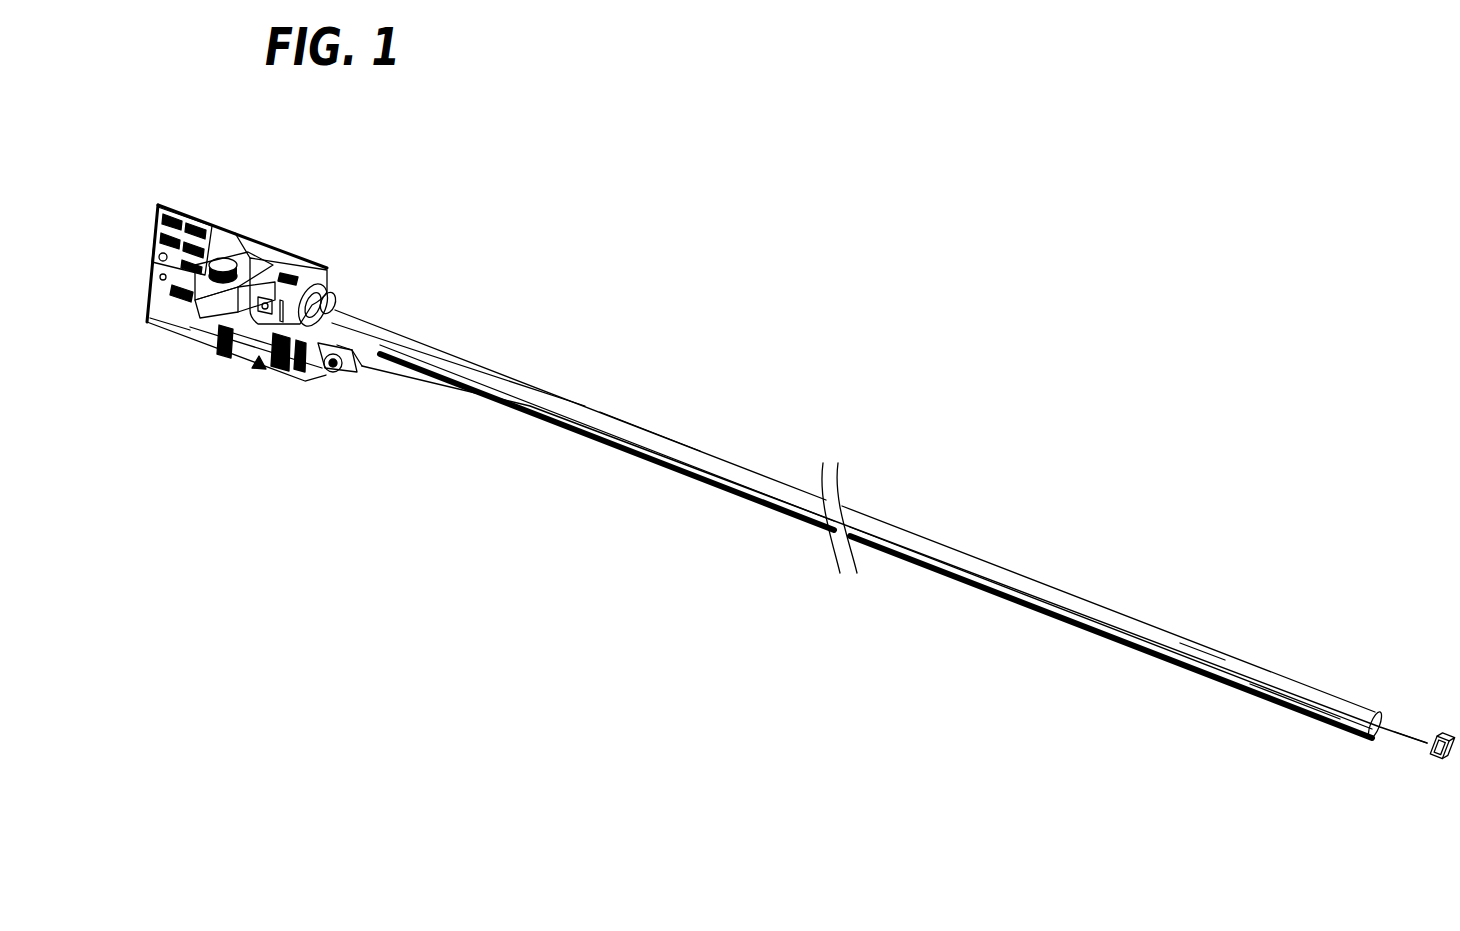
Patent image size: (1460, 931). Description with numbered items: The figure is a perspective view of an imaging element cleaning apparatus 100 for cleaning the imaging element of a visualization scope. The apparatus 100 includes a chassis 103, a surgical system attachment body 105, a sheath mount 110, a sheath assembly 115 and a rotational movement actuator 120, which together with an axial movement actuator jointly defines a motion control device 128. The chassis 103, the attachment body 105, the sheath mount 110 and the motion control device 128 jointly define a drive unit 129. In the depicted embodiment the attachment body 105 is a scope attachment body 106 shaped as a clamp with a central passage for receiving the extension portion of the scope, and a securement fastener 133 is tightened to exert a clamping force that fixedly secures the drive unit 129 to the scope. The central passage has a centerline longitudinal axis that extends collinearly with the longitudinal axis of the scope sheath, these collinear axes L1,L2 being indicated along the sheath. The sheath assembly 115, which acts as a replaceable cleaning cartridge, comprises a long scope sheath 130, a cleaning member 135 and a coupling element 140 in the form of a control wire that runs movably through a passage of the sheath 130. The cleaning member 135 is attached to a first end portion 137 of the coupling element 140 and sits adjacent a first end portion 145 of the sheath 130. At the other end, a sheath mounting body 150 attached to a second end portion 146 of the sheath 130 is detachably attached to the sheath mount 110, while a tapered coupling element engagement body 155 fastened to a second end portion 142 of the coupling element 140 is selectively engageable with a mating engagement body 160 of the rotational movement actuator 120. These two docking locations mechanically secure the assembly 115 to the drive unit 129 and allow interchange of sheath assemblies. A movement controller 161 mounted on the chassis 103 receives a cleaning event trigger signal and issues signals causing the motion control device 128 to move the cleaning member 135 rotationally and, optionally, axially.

The imaging element cleaning apparatus 100 is at (767, 273).
The chassis 103 is at (188, 333).
The surgical system attachment body 105 is at (272, 255).
The scope attachment body 106 is at (240, 250).
The sheath mount 110 is at (298, 258).
The sheath assembly 115 is at (682, 436).
The rotational movement actuator 120 is at (245, 347).
The motion control device 128 is at (259, 368).
The drive unit 129 is at (150, 331).
The scope sheath 130 is at (1005, 570).
The securement fastener 133 is at (222, 257).
The cleaning member 135 is at (1437, 730).
The first end portion of coupling element 137 is at (1410, 750).
The coupling element 140 is at (385, 365).
The second end portion of coupling element 142 is at (360, 367).
The first end portion of scope sheath 145 is at (1302, 710).
The second end portion of scope sheath 146 is at (337, 308).
The sheath mounting body 150 is at (333, 293).
The coupling element engagement body 155 is at (337, 375).
The mating engagement body 160 is at (330, 368).
The movement controller 161 is at (158, 222).
The centerline longitudinal axes L1,L2 is at (1198, 650).